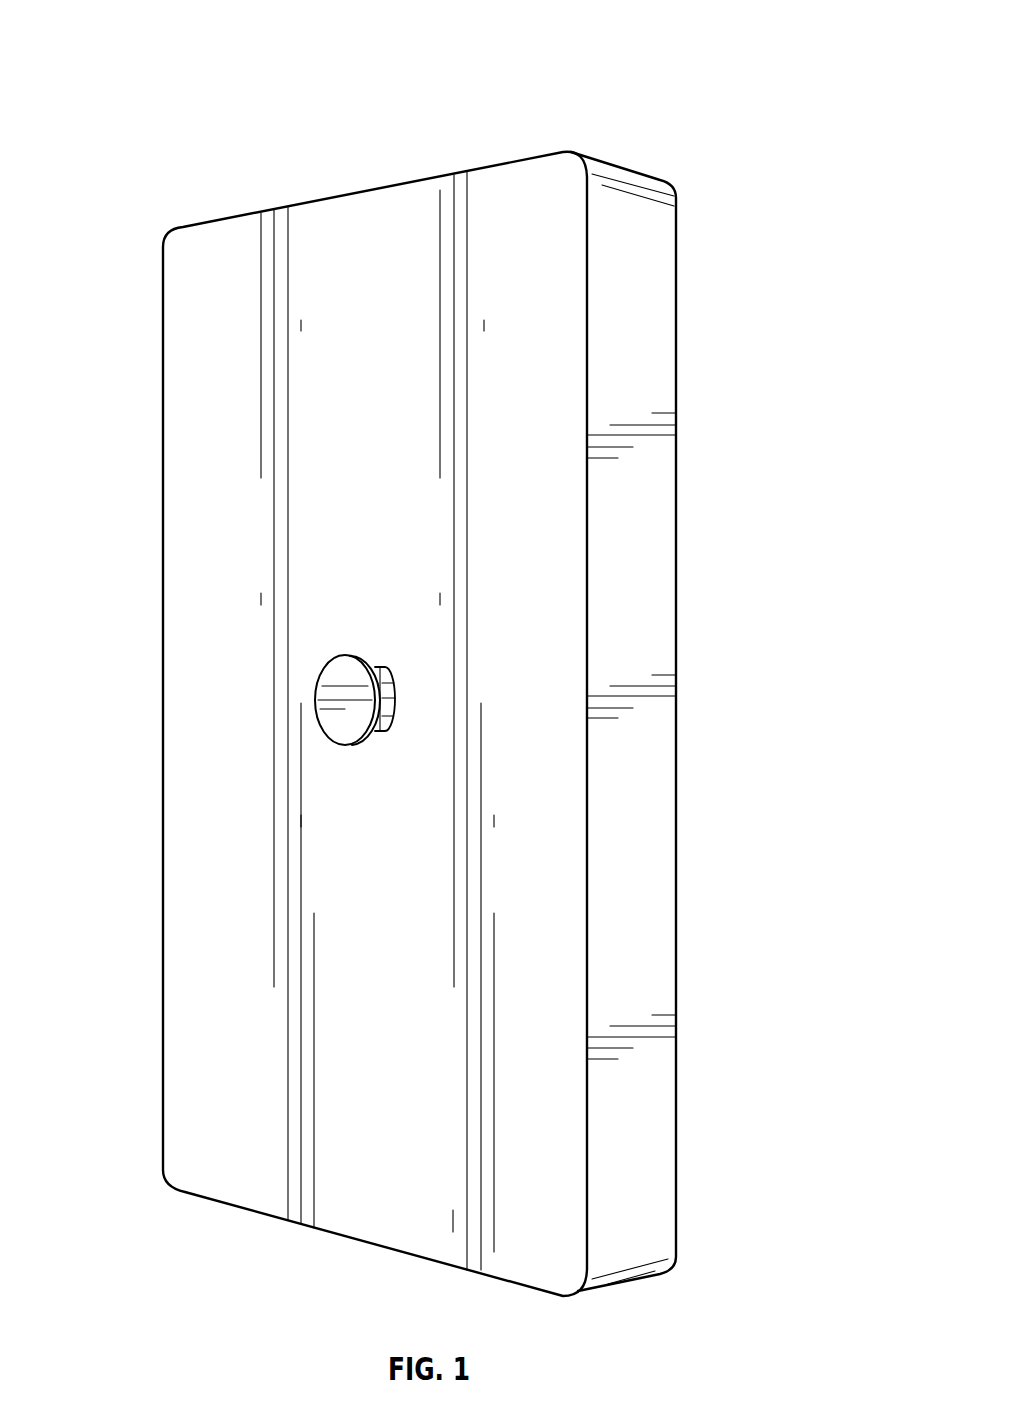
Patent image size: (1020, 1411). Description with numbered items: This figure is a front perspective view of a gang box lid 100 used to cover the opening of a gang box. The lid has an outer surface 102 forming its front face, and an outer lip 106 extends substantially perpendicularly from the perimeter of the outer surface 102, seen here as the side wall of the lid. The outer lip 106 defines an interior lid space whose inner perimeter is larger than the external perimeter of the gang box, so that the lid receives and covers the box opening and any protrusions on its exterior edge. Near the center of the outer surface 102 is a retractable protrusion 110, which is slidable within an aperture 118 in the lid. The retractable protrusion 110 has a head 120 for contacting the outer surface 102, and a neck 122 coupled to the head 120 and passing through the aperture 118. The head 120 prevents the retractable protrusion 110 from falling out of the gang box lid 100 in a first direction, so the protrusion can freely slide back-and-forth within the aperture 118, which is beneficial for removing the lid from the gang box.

The gang box lid 100 is at (438, 649).
The outer surface 102 is at (388, 416).
The outer lip 106 is at (627, 497).
The retractable protrusion 110 is at (391, 658).
The aperture 118 is at (392, 660).
The head 120 is at (340, 672).
The neck 122 is at (393, 692).